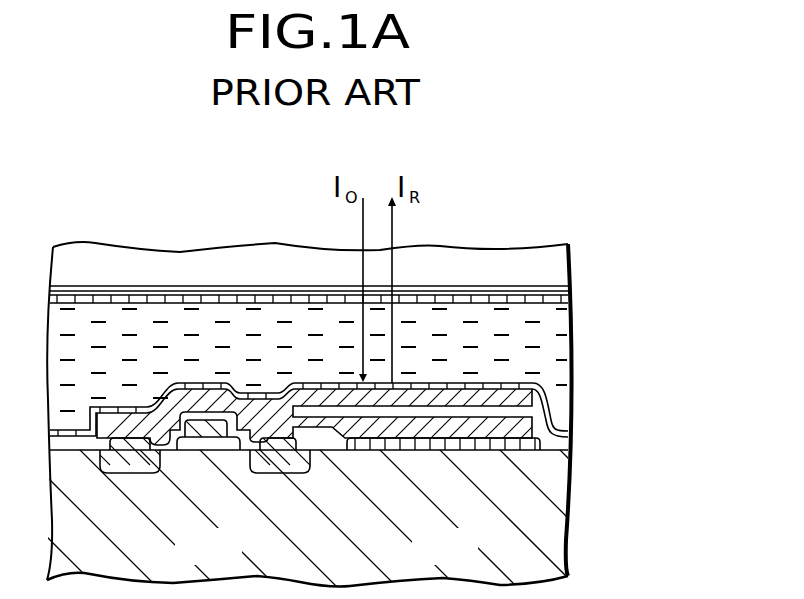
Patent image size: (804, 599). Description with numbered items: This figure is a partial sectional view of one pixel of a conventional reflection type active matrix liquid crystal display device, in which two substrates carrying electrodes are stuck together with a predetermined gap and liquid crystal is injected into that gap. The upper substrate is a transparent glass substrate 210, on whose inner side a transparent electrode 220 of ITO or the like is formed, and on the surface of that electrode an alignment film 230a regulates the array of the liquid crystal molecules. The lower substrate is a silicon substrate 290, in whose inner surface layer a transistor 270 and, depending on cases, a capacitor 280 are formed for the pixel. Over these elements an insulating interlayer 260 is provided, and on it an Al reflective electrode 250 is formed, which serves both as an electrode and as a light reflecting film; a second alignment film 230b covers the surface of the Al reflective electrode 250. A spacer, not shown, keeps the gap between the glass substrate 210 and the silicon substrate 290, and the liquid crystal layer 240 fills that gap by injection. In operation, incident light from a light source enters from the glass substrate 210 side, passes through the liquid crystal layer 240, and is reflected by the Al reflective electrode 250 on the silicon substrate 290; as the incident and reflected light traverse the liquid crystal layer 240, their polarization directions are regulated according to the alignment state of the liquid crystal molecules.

The transparent glass substrate 210 is at (552, 256).
The transparent electrode 220 is at (555, 292).
The alignment film 230a is at (556, 306).
The liquid crystal layer 240 is at (560, 347).
The alignment film 230b is at (526, 375).
The Al reflective electrode 250 is at (553, 408).
The insulating interlayer 260 is at (556, 440).
The transistor 270 is at (310, 513).
The capacitor 280 is at (540, 513).
The silicon substrate 290 is at (557, 502).